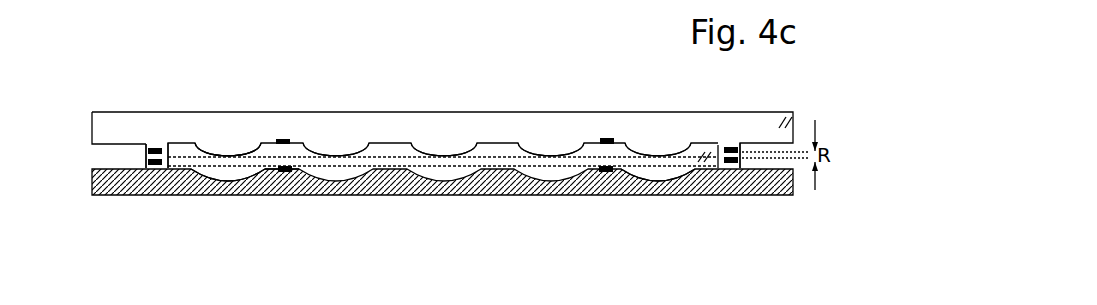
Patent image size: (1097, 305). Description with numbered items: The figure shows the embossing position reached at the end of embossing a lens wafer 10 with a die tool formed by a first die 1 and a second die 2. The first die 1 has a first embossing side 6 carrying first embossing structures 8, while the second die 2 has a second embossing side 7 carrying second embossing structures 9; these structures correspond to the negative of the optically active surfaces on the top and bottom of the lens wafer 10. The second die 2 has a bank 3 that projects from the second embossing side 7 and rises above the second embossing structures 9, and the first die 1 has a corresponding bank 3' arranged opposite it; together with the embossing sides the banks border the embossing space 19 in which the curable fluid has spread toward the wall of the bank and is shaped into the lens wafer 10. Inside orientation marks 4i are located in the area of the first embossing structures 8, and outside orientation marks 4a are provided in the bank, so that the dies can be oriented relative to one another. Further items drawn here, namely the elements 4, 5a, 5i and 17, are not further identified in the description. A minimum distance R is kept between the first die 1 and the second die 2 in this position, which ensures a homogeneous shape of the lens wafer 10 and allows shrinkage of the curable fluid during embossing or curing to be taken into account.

The first die 1 is at (158, 65).
The second die 2 is at (605, 247).
The bank 3 is at (429, 178).
The bank 3' is at (441, 120).
The bonding connection 4 is at (153, 165).
The outside orientation marks 4a is at (160, 148).
The inside orientation marks 4i is at (600, 140).
The outer contact pad 5a is at (733, 167).
The inner contact pad 5i is at (606, 170).
The first embossing side 6 is at (386, 143).
The second embossing side 7 is at (277, 175).
The first embossing structures 8 is at (232, 155).
The second embossing structures 9 is at (229, 181).
The lens wafer 10 is at (624, 144).
The spacer layer 17 is at (146, 157).
The embossing space 19 is at (668, 169).